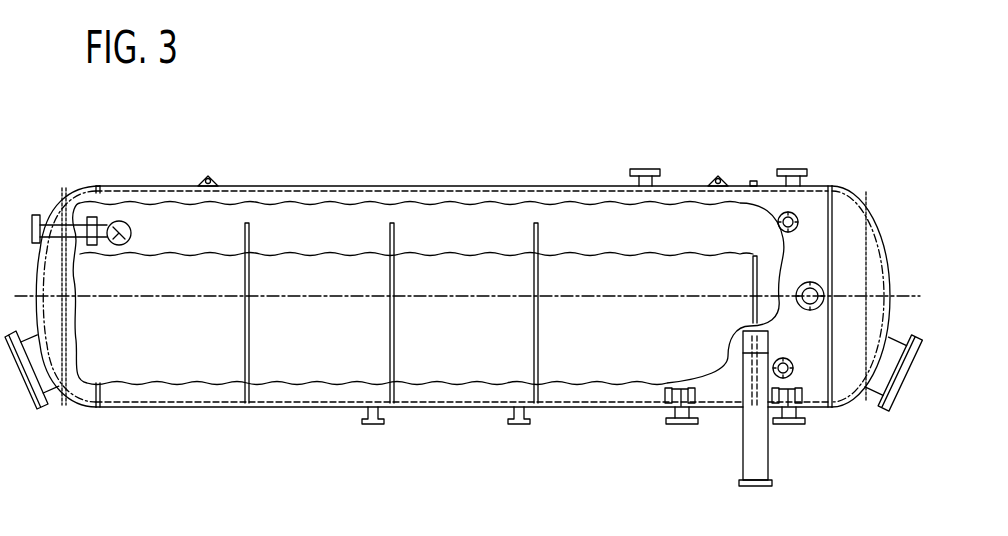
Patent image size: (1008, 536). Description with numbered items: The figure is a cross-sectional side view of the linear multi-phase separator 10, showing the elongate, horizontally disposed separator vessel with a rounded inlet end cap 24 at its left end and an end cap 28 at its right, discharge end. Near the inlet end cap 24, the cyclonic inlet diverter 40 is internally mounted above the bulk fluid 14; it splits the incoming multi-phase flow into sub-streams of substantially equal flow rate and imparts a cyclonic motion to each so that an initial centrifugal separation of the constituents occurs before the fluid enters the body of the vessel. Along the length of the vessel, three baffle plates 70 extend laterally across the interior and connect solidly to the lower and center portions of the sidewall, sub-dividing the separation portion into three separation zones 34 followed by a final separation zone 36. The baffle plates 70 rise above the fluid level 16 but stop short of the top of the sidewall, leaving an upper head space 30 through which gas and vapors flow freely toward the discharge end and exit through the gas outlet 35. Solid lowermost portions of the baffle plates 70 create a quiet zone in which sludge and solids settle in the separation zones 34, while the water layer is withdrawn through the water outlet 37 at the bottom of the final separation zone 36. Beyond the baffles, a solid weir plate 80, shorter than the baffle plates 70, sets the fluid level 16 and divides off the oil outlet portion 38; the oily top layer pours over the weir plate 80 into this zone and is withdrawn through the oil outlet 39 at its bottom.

The multi-phase separator 10 is at (670, 93).
The bulk fluid 14 is at (490, 272).
The fluid level 16 is at (351, 253).
The inlet end cap 24 is at (38, 263).
The second head 28 is at (888, 270).
The upper head space 30 is at (190, 243).
The separation zones 34 is at (229, 372).
The gas outlet 35 is at (791, 170).
The final separation zone 36 is at (600, 347).
The water outlet 37 is at (681, 426).
The oil outlet portion 38 is at (810, 346).
The oil outlet 39 is at (790, 427).
The cyclonic inlet diverter 40 is at (128, 198).
The baffle plates 70 is at (250, 288).
The weir plate 80 is at (752, 280).